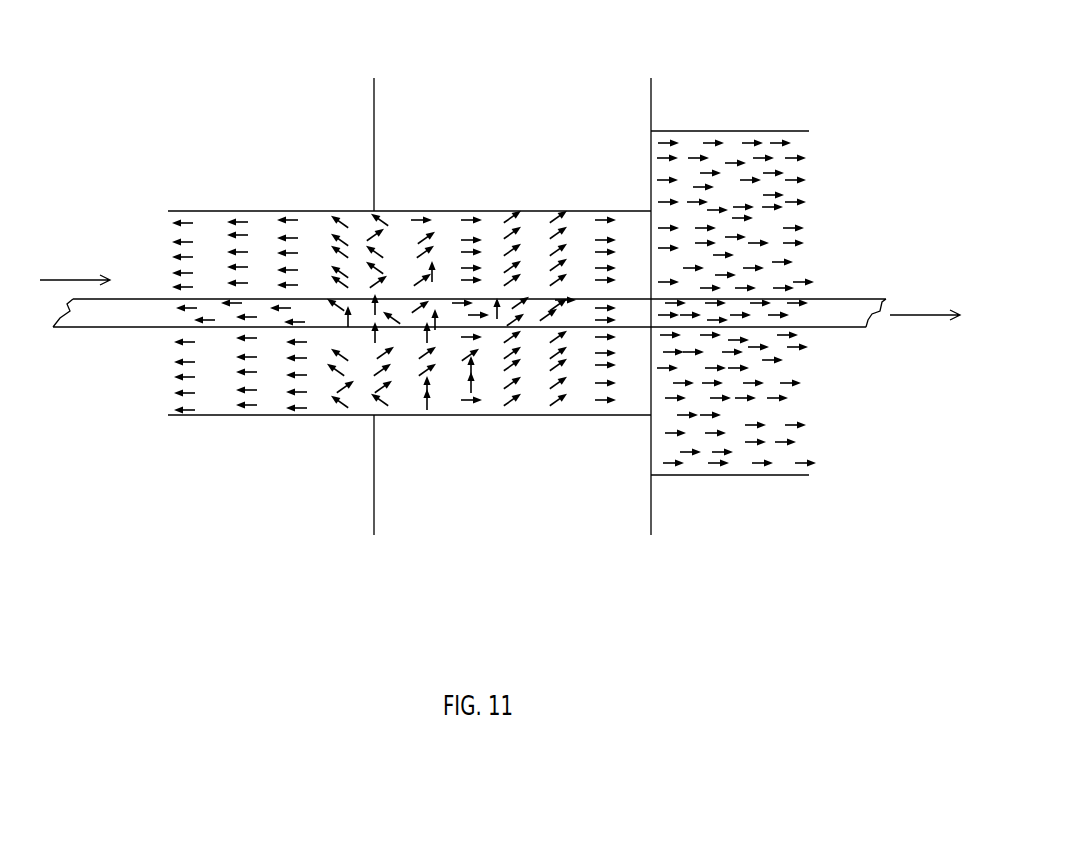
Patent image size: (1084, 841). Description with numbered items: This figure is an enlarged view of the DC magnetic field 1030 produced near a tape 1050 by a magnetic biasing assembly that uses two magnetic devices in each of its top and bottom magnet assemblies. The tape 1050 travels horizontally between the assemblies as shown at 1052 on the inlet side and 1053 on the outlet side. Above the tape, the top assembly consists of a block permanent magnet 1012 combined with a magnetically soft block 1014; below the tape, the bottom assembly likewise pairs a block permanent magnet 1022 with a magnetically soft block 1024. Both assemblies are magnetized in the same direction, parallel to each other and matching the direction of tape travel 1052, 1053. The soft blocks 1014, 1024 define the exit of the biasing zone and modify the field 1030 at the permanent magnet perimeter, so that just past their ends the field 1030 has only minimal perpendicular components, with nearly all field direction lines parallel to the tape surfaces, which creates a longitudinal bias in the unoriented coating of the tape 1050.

The block permanent magnet 1012 is at (283, 124).
The magnetic device of magnetically soft material 1014 is at (533, 124).
The block permanent magnet 1022 is at (297, 491).
The magnetic device of magnetically soft material 1024 is at (531, 483).
The DC magnetic field 1030 is at (745, 115).
The tape 1050 is at (147, 329).
The direction of travel of the tape 1052 is at (72, 280).
The direction of travel of the tape 1053 is at (925, 316).